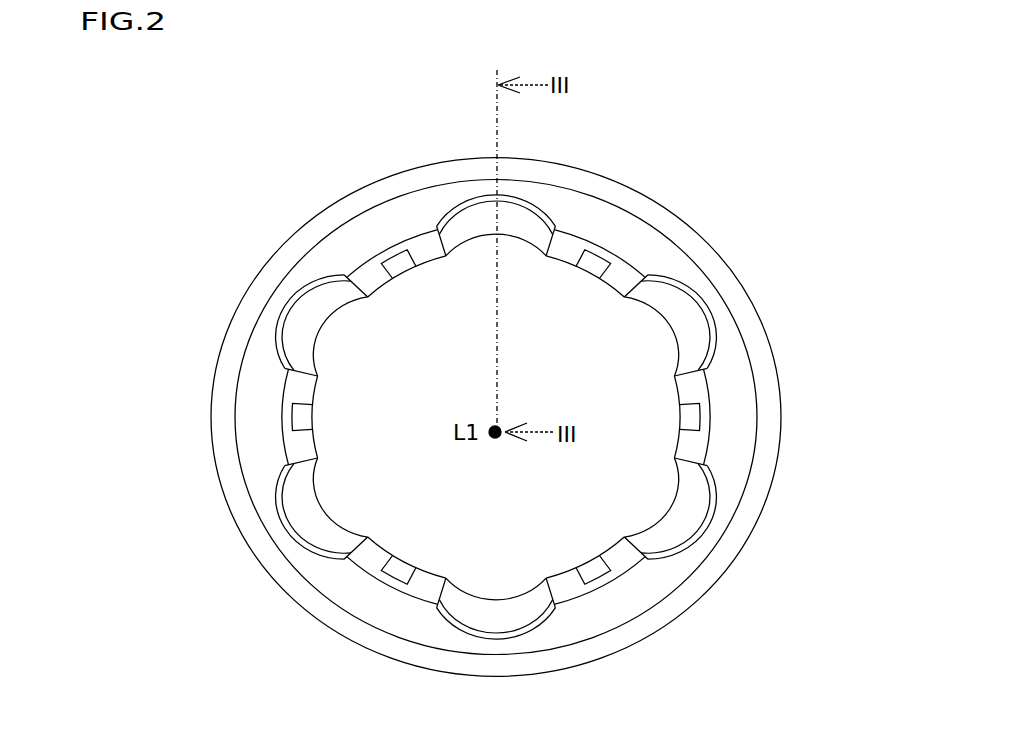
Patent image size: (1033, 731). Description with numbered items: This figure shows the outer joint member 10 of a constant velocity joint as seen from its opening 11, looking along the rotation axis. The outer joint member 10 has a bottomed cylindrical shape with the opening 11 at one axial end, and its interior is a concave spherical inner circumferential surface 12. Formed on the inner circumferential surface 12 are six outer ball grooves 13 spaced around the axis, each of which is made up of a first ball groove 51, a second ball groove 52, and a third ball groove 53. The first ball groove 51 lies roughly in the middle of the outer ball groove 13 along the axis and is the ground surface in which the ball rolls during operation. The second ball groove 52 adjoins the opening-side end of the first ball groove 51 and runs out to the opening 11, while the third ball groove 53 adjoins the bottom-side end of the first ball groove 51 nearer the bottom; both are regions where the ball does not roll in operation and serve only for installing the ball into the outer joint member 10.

The outer joint member 10 is at (744, 233).
The opening 11 is at (398, 222).
The inner circumferential surface 12 is at (601, 250).
The outer ball grooves 13 is at (513, 222).
The first ball groove 51 is at (488, 212).
The second ball groove 52 is at (455, 222).
The third ball groove 53 is at (403, 268).